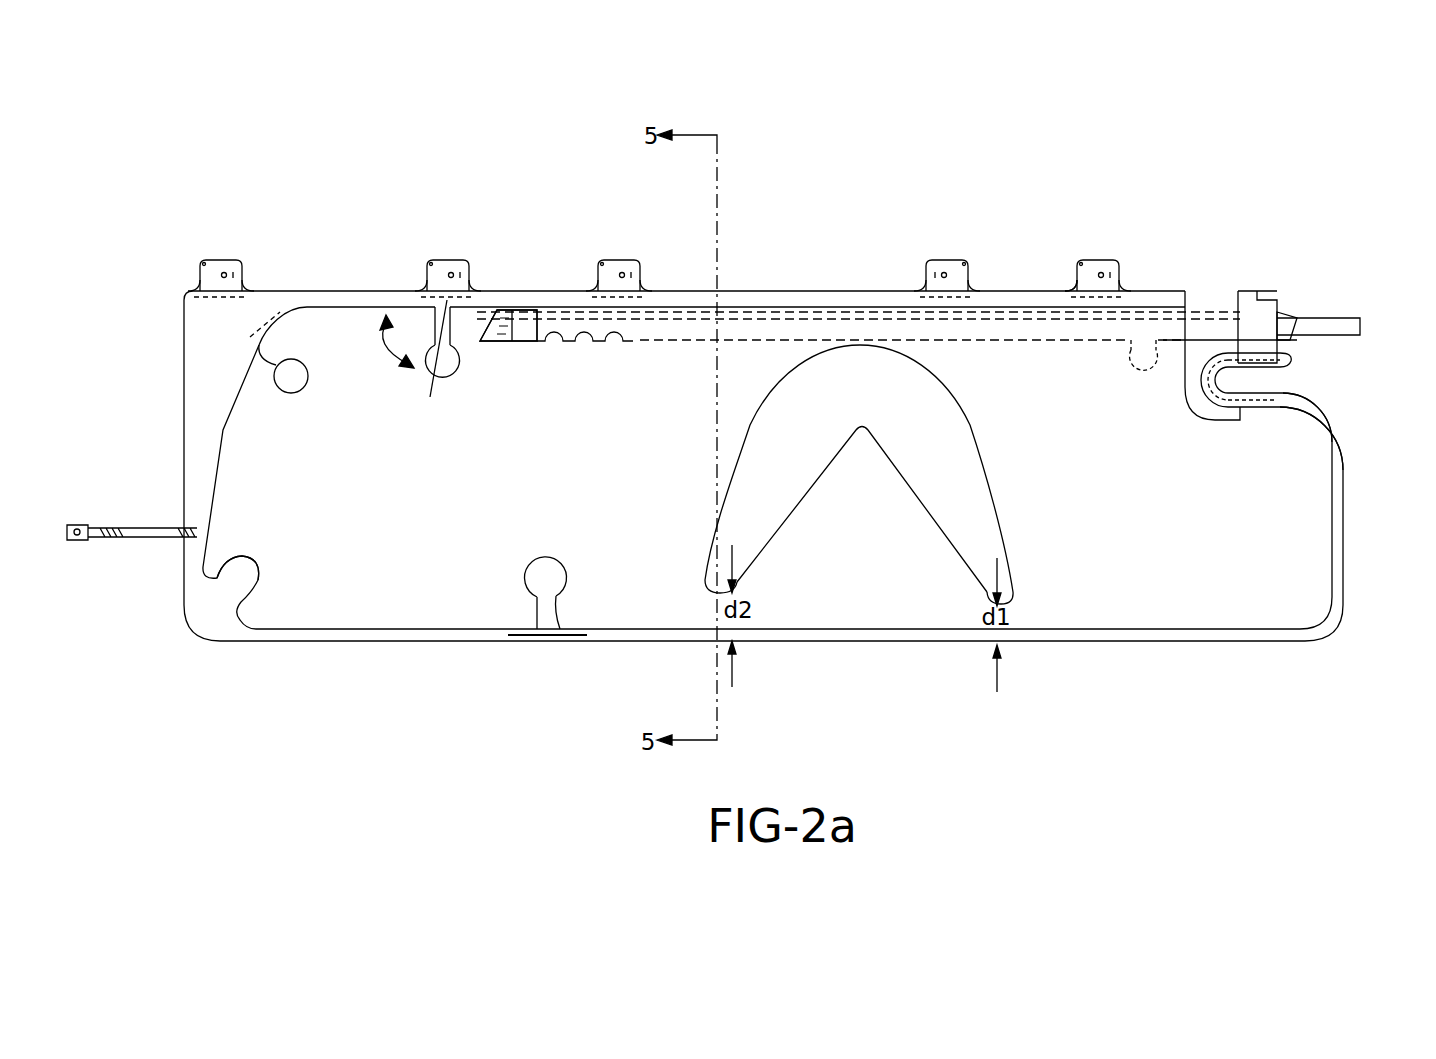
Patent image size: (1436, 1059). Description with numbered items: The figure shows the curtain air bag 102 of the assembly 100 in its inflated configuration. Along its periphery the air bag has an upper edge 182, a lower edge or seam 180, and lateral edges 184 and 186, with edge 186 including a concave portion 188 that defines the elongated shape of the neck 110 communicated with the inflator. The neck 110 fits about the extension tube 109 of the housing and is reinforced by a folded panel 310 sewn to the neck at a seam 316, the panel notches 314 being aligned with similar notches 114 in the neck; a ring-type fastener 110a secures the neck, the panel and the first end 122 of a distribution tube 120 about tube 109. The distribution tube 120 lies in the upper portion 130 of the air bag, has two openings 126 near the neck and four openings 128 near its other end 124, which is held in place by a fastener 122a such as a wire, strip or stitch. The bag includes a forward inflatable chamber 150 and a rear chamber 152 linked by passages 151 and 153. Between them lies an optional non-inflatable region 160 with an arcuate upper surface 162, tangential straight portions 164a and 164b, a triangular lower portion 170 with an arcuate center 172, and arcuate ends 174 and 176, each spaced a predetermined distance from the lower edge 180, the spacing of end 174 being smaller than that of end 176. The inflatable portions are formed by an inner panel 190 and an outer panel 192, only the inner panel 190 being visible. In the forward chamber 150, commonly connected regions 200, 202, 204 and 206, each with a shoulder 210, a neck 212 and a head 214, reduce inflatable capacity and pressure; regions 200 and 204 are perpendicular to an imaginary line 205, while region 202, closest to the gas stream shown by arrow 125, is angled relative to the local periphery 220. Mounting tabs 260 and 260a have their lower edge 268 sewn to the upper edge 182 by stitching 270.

The sun visor assembly 100 is at (313, 282).
The air bag 102 is at (750, 353).
The extension tube 109 is at (1327, 318).
The neck portion 110 is at (1198, 300).
The ring-type fastener 110a is at (1256, 292).
The notches 114 is at (1283, 354).
The distribution tube 120 is at (824, 329).
The first end 122 is at (1285, 315).
The fastener 122a is at (513, 331).
The end 124 is at (495, 316).
The arrow 125 is at (462, 370).
The openings 126 is at (1143, 380).
The openings 128 is at (617, 336).
The upper portion 130 is at (650, 362).
The first inflatable chamber 150 is at (366, 493).
The passage 151 is at (808, 357).
The rear inflatable chamber 152 is at (1083, 493).
The passage 153 is at (852, 607).
The non-inflatable region 160 is at (841, 408).
The upper surface 162 is at (940, 375).
The straight portion 164a is at (723, 478).
The straight portion 164b is at (1010, 512).
The lower triangular shape 170 is at (797, 512).
The center 172 is at (866, 430).
The first arcuately shaped end 174 is at (1023, 605).
The second arcuately shaped end 176 is at (703, 596).
The lower edge 180 is at (920, 632).
The upper edge 182 is at (370, 297).
The lateral edge 184 is at (190, 432).
The lateral edge 186 is at (1343, 520).
The concave portion 188 is at (1345, 404).
The inner panel 190 is at (363, 590).
The outer panel 192 is at (428, 597).
The commonly connected region 200 is at (513, 571).
The commonly connected region 202 is at (420, 376).
The commonly connected region 204 is at (283, 405).
The imaginary line 205 is at (243, 343).
The commonly connected region 206 is at (262, 568).
The shoulder 210 is at (548, 625).
The neck 212 is at (535, 612).
The head 214 is at (547, 563).
The local periphery 220 is at (368, 350).
The tab 260 is at (222, 268).
The center mounting foot 260a is at (618, 268).
The lower edge 268 is at (1068, 297).
The stitching 270 is at (241, 288).
The reinforcement panel 310 is at (1212, 430).
The notches 314 is at (1297, 377).
The seam 316 is at (1195, 402).